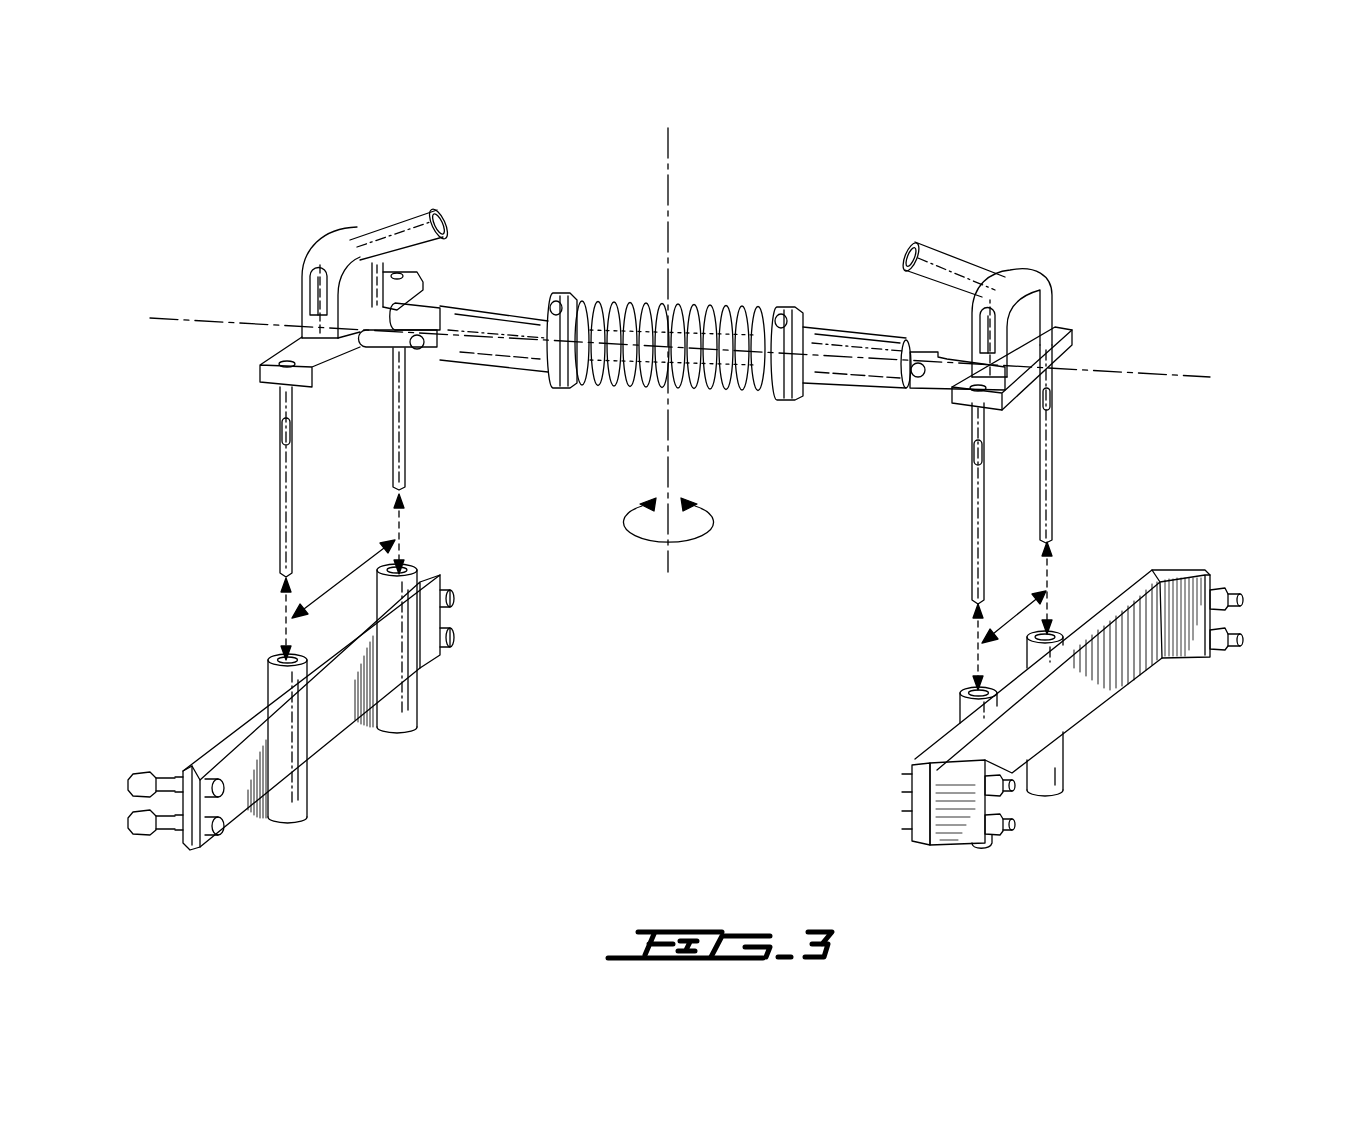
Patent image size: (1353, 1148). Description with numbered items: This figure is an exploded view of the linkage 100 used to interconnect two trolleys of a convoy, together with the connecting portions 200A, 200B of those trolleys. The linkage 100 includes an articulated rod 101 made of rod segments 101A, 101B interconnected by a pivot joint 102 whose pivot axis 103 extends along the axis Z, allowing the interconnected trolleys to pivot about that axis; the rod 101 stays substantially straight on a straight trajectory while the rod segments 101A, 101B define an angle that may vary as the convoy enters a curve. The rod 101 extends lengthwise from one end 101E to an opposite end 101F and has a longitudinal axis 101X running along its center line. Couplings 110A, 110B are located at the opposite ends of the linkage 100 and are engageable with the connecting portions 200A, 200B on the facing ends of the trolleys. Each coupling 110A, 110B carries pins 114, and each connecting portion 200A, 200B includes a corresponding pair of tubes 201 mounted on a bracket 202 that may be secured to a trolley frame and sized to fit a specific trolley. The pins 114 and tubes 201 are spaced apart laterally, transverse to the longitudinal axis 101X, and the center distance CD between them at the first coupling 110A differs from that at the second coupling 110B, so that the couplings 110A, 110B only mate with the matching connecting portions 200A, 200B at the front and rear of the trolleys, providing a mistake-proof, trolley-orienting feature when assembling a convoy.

The linkage 100 is at (822, 128).
The articulated rod 101 is at (845, 292).
The rod segment 101A is at (492, 310).
The rod segment 101B is at (848, 400).
The end of the rod 101E is at (380, 358).
The opposite end of the rod 101F is at (960, 338).
The longitudinal axis 101X is at (1180, 368).
The pivot joint 102 is at (684, 312).
The pivot axis 103 is at (668, 420).
The coupling 110A is at (272, 298).
The coupling 110B is at (1092, 298).
The pins 114 is at (280, 482).
The connecting portion 200A is at (212, 688).
The connecting portion 200B is at (1208, 535).
The tubes 201 is at (297, 780).
The bracket 202 is at (238, 796).
The center distance CD is at (352, 587).